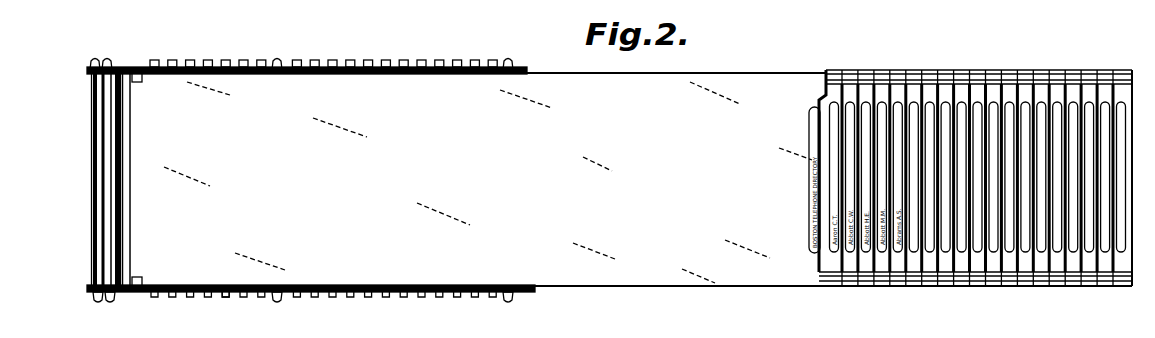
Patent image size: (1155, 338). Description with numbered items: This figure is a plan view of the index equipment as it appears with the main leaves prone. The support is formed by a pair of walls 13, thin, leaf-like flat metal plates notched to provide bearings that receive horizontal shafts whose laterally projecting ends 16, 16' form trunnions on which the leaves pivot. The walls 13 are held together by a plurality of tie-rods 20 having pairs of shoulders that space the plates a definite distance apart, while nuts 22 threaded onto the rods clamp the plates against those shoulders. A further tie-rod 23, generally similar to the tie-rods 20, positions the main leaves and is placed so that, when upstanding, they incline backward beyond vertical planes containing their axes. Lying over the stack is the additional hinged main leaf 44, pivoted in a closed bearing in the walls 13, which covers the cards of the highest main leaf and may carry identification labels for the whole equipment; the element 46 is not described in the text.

The walls 13 is at (88, 71).
The laterally projecting ends 16 is at (323, 191).
The notch 16' is at (218, 306).
The tie-rods 20 is at (93, 162).
The nuts 22 is at (108, 58).
The tie-rod 23 is at (121, 213).
The hinged main leaf 44 is at (635, 272).
The clip 46 is at (136, 290).